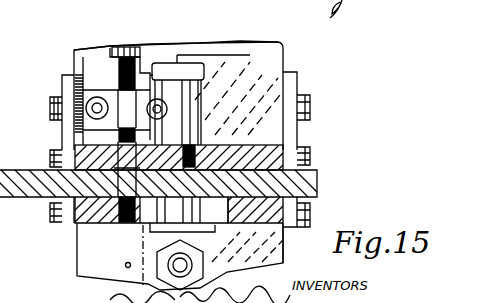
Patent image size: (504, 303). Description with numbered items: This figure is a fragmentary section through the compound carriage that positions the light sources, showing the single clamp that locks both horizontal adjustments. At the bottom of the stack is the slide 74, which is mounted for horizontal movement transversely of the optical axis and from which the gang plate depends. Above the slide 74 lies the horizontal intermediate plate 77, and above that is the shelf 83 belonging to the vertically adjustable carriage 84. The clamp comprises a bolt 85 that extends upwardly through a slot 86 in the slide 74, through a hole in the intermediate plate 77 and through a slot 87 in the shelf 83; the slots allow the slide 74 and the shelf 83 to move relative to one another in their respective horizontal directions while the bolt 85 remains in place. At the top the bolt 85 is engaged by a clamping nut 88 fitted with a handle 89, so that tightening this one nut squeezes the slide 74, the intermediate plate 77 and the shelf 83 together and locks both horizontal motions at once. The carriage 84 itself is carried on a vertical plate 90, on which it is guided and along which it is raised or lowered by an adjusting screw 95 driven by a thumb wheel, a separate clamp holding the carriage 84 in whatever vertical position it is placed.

The slide 74 is at (80, 223).
The intermediate plate 77 is at (285, 183).
The shelf 83 is at (300, 146).
The vertically adjustable carriage 84 is at (285, 91).
The bolt 85 is at (147, 228).
The slot 86 is at (140, 224).
The slot 87 is at (200, 153).
The clamping nut 88 is at (205, 72).
The handle 89 is at (184, 72).
The vertical plate 90 is at (245, 47).
The adjusting screw 95 is at (140, 52).